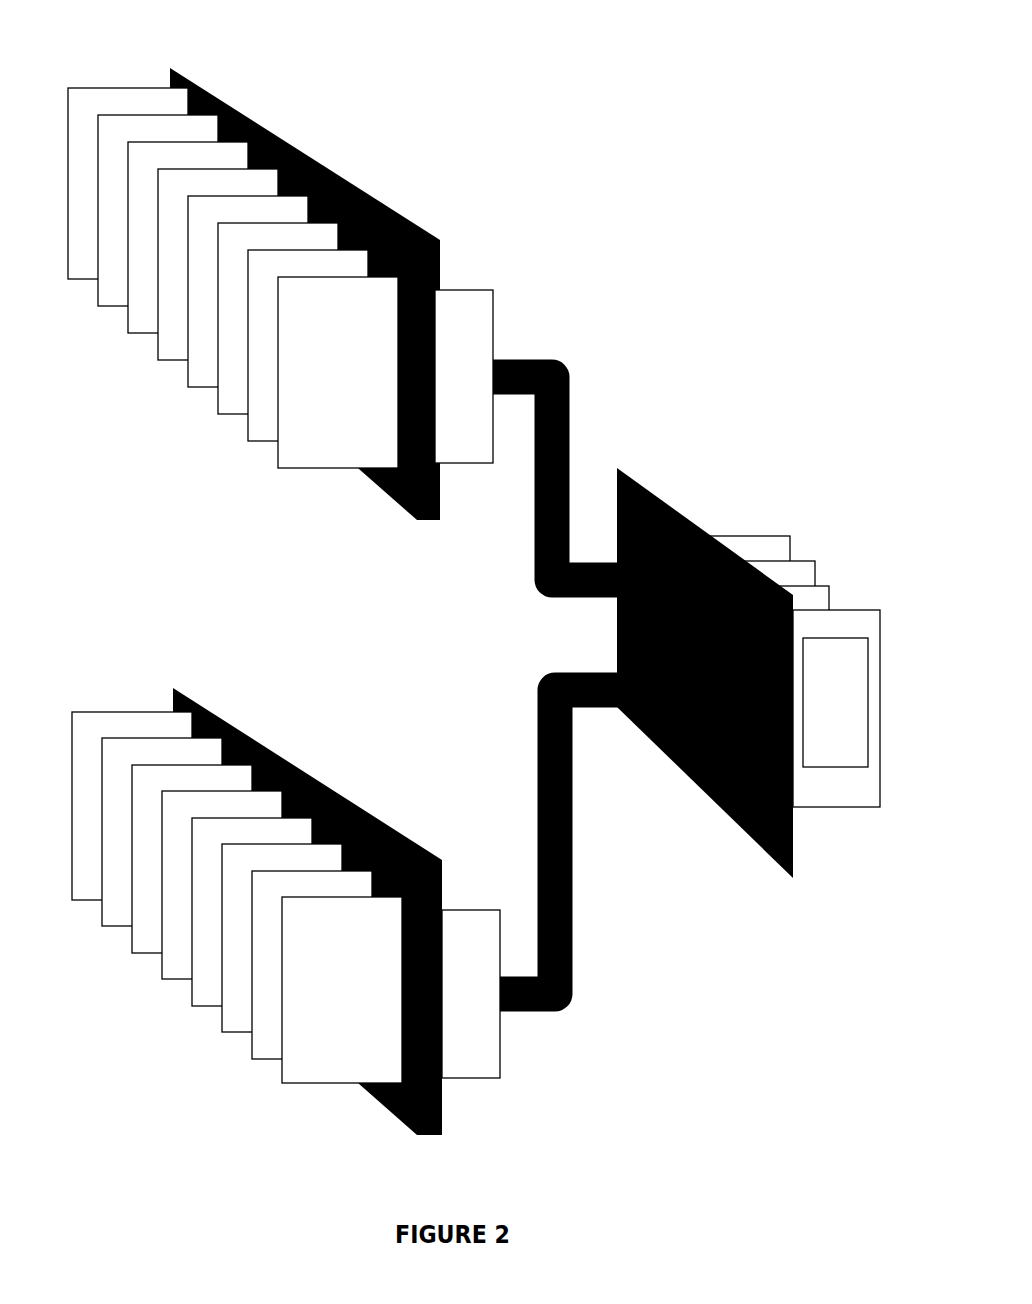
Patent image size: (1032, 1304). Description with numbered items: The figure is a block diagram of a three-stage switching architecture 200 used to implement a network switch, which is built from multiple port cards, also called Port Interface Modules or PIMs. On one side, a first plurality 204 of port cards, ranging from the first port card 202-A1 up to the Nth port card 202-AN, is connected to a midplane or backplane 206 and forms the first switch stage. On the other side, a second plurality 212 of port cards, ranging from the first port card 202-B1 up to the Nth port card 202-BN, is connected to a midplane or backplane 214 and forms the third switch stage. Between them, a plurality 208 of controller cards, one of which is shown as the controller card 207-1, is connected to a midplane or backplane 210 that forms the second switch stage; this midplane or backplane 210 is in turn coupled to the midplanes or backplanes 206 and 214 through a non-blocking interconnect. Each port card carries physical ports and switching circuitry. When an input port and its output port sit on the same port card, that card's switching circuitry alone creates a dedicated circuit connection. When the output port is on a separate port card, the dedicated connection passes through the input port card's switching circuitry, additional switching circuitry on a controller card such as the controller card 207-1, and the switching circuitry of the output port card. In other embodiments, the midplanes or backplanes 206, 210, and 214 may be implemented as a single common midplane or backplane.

The 3-stage switching architecture 200 is at (506, 36).
The port card PIM N 202-AN is at (95, 103).
The port card PIM 1 202-A1 is at (338, 372).
The first plurality of port cards 204 is at (224, 264).
The midplane or backplane 206 is at (375, 192).
The controller card 207-1 is at (853, 795).
The plurality of controller cards 208 is at (755, 673).
The midplane or backplane 210 is at (672, 503).
The second plurality of port cards 212 is at (232, 881).
The midplane or backplane 214 is at (300, 762).
The port card PIM N 202-BN is at (99, 727).
The port card PIM 1 202-B1 is at (342, 990).